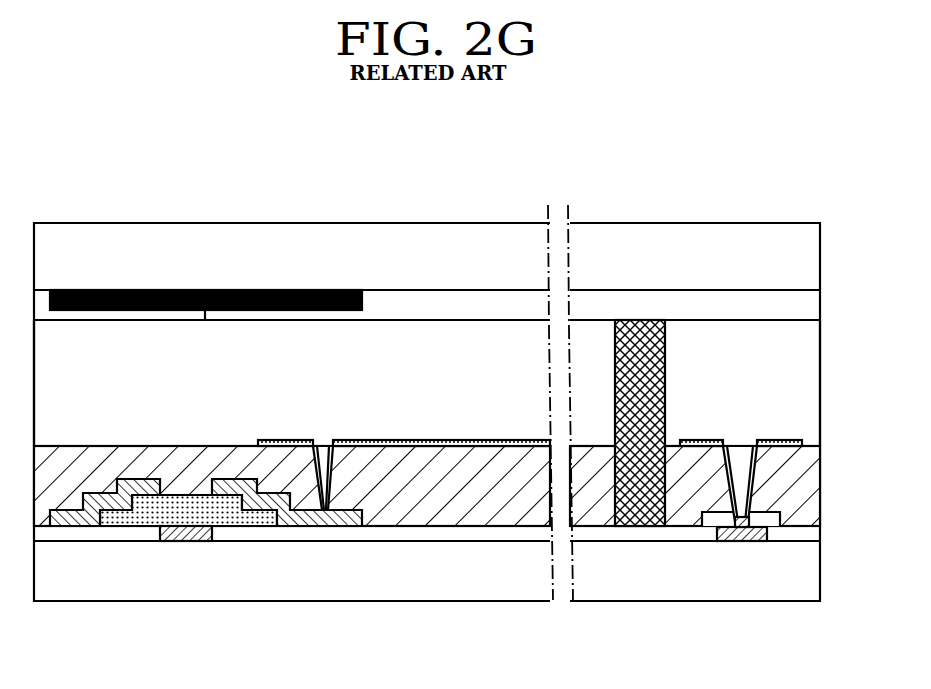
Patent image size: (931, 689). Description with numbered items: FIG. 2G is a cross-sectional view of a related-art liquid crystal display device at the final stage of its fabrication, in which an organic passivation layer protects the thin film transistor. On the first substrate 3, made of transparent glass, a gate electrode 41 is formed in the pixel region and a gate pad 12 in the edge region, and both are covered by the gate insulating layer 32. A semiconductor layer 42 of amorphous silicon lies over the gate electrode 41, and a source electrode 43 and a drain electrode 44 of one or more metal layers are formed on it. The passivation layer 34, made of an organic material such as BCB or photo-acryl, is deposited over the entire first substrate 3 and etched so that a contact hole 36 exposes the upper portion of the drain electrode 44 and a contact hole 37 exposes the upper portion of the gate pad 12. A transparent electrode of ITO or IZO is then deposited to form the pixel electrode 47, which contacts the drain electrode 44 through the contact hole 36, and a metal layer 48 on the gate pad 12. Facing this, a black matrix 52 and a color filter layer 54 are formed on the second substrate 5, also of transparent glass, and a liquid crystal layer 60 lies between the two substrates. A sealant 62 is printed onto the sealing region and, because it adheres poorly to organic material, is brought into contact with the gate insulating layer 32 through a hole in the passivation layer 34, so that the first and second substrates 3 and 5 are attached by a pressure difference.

The first substrate 3 is at (815, 578).
The second substrate 5 is at (815, 250).
The gate pad 12 is at (747, 541).
The gate insulating layer 32 is at (815, 535).
The passivation layer 34 is at (815, 487).
The contact hole 36 is at (327, 438).
The contact hole 37 is at (744, 434).
The gate electrode 41 is at (190, 541).
The semiconductor layer 42 is at (250, 526).
The source electrode 43 is at (76, 526).
The drain electrode 44 is at (322, 526).
The pixel electrode 47 is at (447, 440).
The metal layer 48 is at (702, 443).
The black matrix 52 is at (268, 290).
The color filter layer 54 is at (815, 310).
The liquid crystal layer 60 is at (815, 373).
The sealant 62 is at (665, 345).